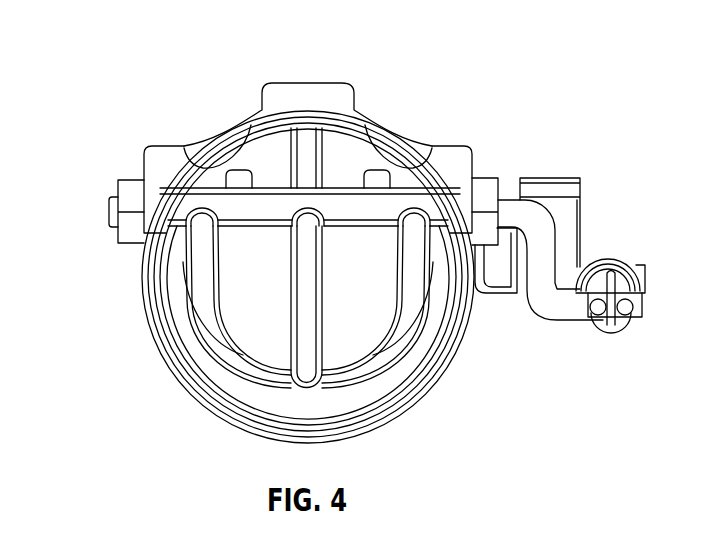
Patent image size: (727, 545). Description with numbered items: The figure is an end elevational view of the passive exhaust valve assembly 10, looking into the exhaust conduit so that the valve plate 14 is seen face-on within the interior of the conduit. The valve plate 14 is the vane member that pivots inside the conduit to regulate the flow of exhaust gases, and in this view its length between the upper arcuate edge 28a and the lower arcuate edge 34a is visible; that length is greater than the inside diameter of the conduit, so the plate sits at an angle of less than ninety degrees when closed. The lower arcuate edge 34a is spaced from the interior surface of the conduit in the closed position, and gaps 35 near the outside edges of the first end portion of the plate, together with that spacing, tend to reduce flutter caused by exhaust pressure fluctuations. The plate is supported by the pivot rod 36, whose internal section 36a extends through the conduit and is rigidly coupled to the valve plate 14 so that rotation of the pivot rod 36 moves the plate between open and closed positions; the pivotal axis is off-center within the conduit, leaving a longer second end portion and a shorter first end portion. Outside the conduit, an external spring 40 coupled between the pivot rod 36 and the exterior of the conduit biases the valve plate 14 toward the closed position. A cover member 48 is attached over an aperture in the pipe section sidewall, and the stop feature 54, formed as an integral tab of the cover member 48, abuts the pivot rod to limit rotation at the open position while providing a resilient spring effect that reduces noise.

The passive exhaust valve assembly 10 is at (136, 110).
The valve plate 14 is at (253, 323).
The upper arcuate edge 28a is at (367, 133).
The lower arcuate edge 34a is at (397, 395).
The gaps 35 is at (232, 160).
The pivot rod 36 is at (110, 211).
The internal section 36a is at (269, 183).
The external spring 40 is at (593, 265).
The cover member 48 is at (340, 81).
The stop feature 54 is at (550, 178).